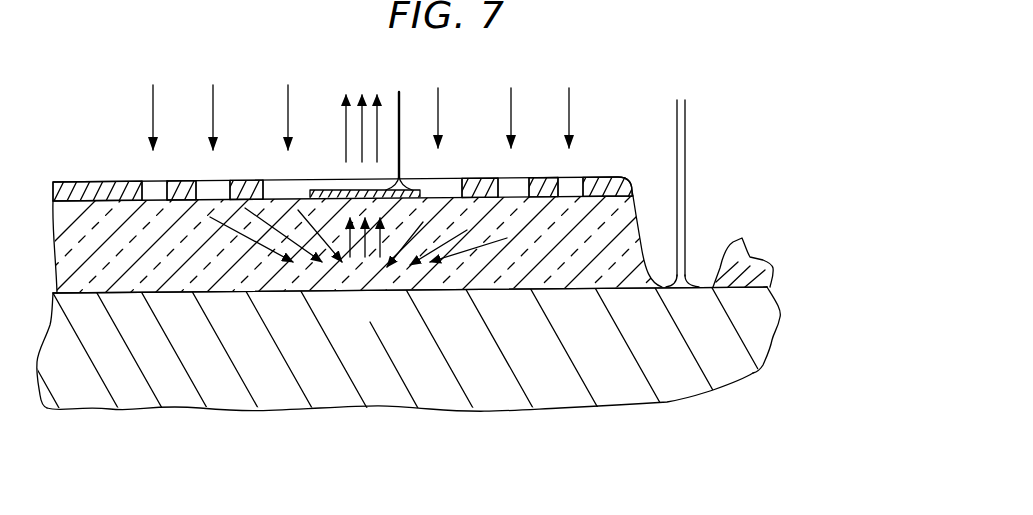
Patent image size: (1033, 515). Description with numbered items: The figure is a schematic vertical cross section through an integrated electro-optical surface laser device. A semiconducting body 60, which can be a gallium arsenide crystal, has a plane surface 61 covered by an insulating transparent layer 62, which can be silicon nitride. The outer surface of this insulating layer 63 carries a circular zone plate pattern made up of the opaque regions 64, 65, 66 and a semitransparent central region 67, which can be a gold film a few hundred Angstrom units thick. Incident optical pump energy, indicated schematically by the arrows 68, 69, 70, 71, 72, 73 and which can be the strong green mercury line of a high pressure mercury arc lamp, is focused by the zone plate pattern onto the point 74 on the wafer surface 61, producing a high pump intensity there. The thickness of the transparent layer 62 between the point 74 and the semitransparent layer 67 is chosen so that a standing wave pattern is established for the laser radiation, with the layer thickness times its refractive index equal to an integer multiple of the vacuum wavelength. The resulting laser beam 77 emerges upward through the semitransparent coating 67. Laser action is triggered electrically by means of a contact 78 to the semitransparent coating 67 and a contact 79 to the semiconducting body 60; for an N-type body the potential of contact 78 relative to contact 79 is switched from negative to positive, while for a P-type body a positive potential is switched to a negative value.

The semiconducting body 60 is at (412, 355).
The plane surface 61 is at (53, 293).
The insulating transparent layer 62 is at (386, 246).
The outer surface of the insulating layer 63 is at (53, 200).
The opaque region 64 is at (113, 183).
The opaque region 65 is at (183, 182).
The opaque region 66 is at (250, 182).
The semitransparent central region 67 is at (340, 190).
The incident pump radiation arrow 68 is at (155, 104).
The incident pump radiation arrow 69 is at (213, 104).
The incident pump radiation arrow 70 is at (286, 104).
The incident pump radiation arrow 71 is at (452, 103).
The incident pump radiation arrow 72 is at (516, 103).
The incident pump radiation arrow 73 is at (576, 103).
The point on the wafer surface 74 is at (362, 289).
The laser beam 77 is at (388, 88).
The contact to the semitransparent coating 78 is at (400, 100).
The contact to the semiconducting body 79 is at (686, 112).